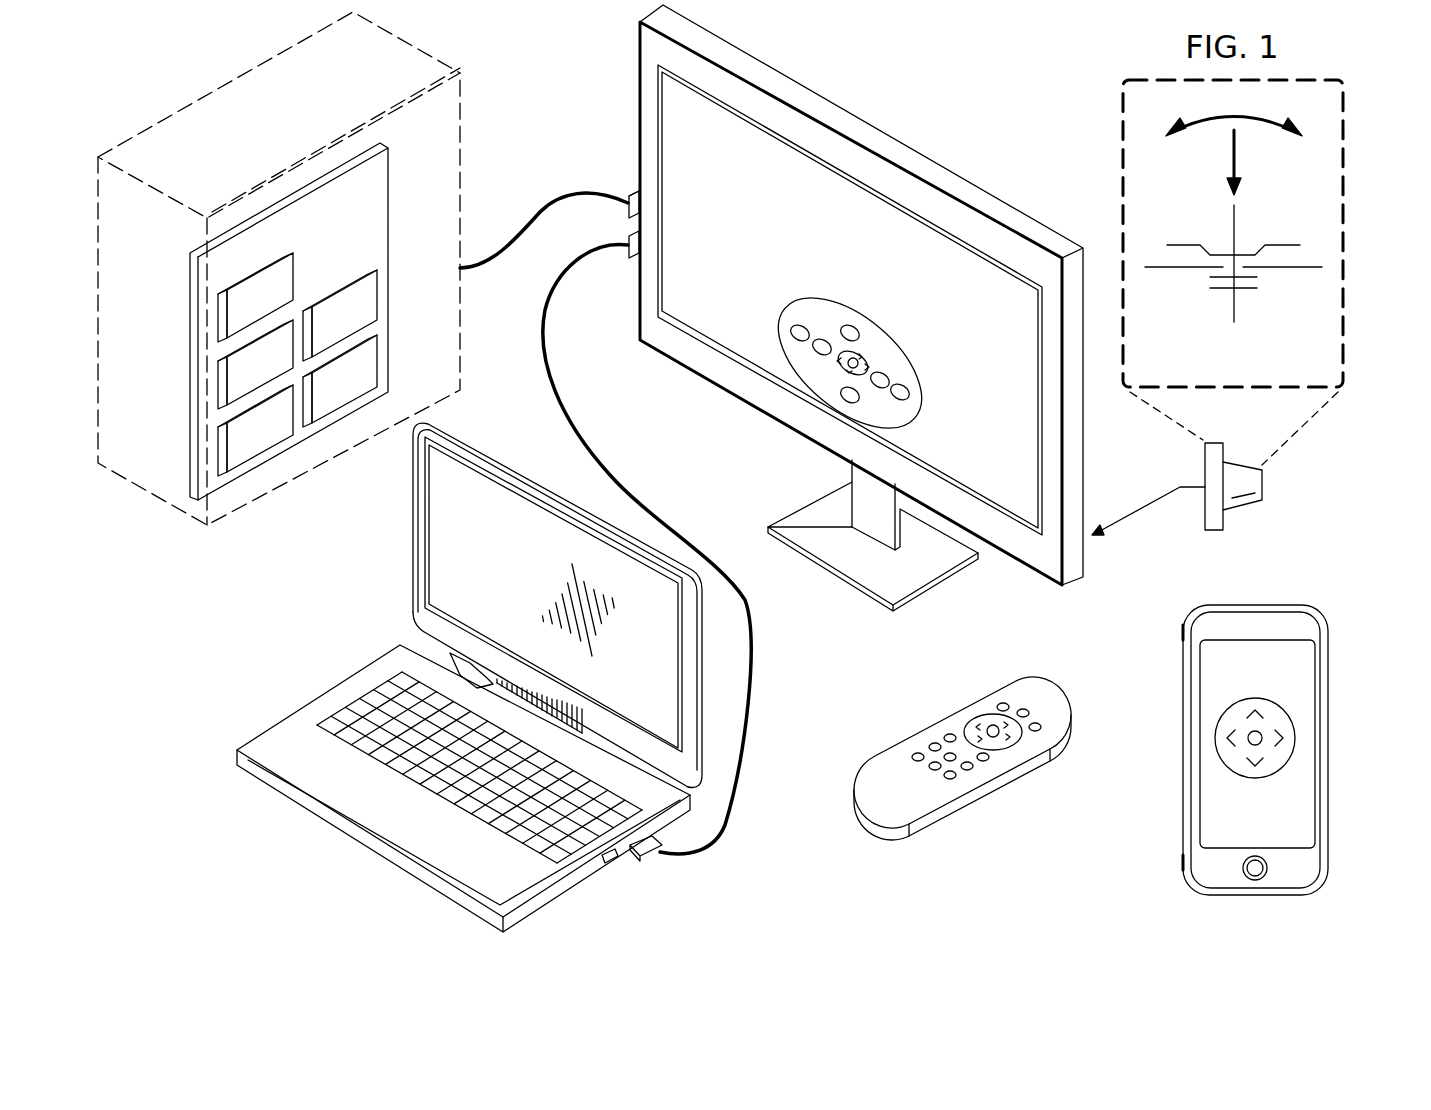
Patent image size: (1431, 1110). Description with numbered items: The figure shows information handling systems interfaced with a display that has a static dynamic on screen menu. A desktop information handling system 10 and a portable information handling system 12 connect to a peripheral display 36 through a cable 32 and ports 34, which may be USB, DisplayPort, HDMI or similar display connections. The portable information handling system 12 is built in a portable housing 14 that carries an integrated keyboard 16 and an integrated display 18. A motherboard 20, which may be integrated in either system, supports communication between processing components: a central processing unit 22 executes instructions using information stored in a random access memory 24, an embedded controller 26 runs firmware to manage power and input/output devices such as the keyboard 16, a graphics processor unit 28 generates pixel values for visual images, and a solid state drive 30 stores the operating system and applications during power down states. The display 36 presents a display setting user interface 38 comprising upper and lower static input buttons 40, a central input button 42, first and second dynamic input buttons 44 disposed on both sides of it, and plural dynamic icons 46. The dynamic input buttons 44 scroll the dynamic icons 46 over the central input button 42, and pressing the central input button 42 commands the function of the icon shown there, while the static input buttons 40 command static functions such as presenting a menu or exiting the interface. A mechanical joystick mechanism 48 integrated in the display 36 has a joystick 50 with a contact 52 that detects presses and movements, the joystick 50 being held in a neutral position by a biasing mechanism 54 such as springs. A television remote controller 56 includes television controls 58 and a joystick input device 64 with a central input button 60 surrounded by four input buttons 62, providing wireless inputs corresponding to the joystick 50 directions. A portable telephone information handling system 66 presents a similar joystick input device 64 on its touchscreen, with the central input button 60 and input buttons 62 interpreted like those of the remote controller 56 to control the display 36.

The desktop information handling system 10 is at (279, 354).
The portable information handling system 12 is at (417, 677).
The portable housing 14 is at (238, 761).
The keyboard 16 is at (420, 777).
The display 18 is at (511, 592).
The motherboard 20 is at (372, 236).
The central processing unit (CPU) 22 is at (218, 315).
The random access memory (RAM) 24 is at (218, 395).
The embedded controller 26 is at (218, 445).
The graphics processor unit (GPU) 28 is at (372, 300).
The solid state drive (SSD) 30 is at (372, 367).
The cable 32 is at (540, 368).
The port 34 is at (606, 282).
The peripheral display 36 is at (940, 247).
The display setting user interface 38 is at (781, 314).
The static input button 40 is at (850, 326).
The central input button 42 is at (858, 356).
The dynamic input button 44 is at (838, 369).
The dynamic icons 46 is at (813, 351).
The joystick mechanism 48 is at (1264, 487).
The joystick 50 is at (1232, 228).
The contact 52 is at (1218, 291).
The biasing mechanism 54 is at (1283, 268).
The television remote controller 56 is at (843, 806).
The television controls 58 is at (925, 738).
The central input button 60 is at (1375, 703).
The input buttons 62 is at (1012, 738).
The joystick input device 64 is at (1003, 753).
The portable telephone information handling system 66 is at (1173, 825).